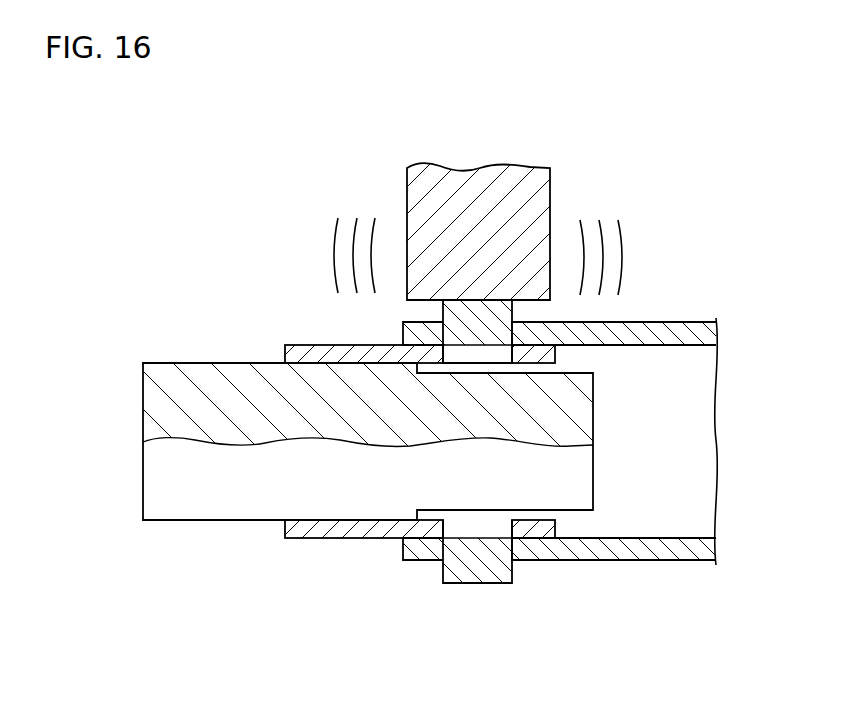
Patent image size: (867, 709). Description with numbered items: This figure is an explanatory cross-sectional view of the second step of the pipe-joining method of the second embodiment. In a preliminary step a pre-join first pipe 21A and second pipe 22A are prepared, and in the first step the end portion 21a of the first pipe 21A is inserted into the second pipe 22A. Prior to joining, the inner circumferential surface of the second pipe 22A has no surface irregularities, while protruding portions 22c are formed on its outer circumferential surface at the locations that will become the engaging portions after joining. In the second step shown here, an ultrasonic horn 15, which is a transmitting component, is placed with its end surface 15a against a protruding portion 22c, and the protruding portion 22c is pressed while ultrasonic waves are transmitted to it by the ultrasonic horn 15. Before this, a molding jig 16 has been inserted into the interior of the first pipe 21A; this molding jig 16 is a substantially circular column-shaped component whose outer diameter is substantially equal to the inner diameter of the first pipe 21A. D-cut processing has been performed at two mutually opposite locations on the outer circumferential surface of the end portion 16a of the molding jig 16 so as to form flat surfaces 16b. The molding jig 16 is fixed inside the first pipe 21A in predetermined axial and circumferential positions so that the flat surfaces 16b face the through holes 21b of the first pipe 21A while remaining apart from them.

The ultrasonic horn 15 is at (550, 193).
The end surface of the ultrasonic horn 15a is at (514, 317).
The molding jig 16 is at (420, 483).
The end portion of the molding jig 16a is at (585, 473).
The flat surfaces 16b is at (585, 362).
The first pipe 21A is at (303, 539).
The end portion of the first pipe 21a is at (533, 530).
The through holes 21b is at (446, 348).
The second pipe 22A is at (650, 563).
The protruding portions 22c is at (470, 308).